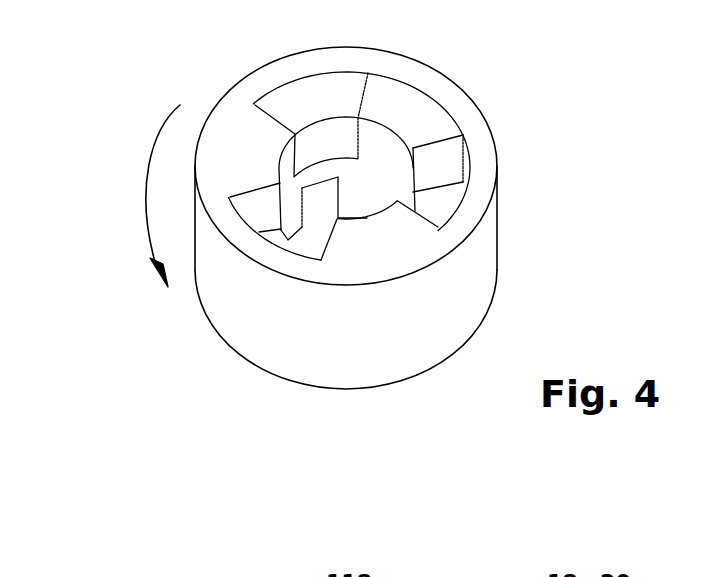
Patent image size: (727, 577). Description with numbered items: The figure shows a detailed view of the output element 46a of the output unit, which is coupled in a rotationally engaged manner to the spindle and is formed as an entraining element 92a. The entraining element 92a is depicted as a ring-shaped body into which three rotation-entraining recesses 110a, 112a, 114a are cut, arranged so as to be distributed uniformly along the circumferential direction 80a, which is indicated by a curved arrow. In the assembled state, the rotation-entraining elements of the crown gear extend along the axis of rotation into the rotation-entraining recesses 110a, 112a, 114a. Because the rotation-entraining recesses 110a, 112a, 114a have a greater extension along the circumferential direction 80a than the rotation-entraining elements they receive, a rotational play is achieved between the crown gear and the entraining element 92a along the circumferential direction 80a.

The rotation-entraining recess 110a is at (307, 96).
The rotation-entraining recess 112a is at (445, 165).
The rotation-entraining recess 114a is at (280, 239).
The output element 46a is at (485, 232).
The entraining element 92a is at (485, 262).
The circumferential direction 80a is at (140, 190).